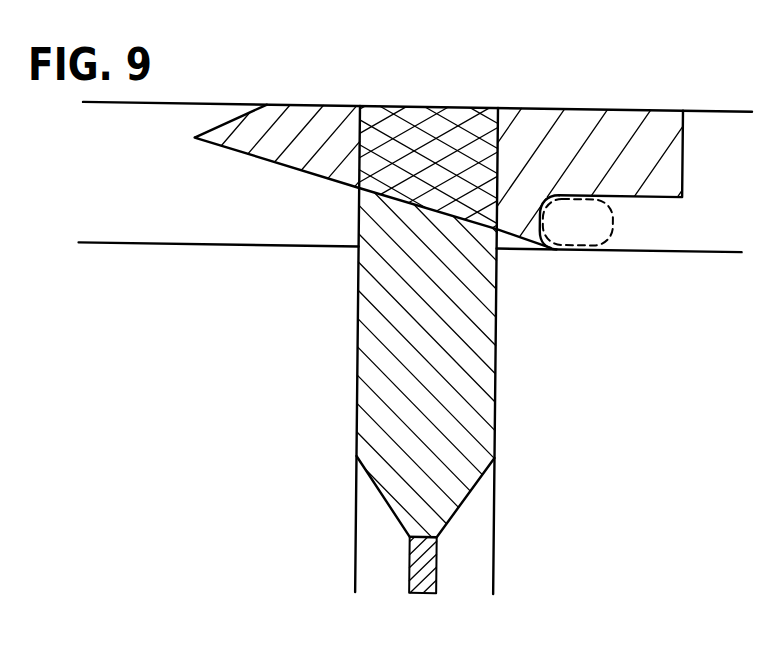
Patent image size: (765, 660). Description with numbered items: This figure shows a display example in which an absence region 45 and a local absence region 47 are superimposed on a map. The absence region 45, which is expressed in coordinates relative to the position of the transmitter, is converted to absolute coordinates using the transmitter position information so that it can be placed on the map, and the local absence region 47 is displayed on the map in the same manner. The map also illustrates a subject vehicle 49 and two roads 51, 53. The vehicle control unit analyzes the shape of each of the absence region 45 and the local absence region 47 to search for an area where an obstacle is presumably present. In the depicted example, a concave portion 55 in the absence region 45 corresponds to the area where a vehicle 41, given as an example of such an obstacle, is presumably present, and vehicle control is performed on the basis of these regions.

The vehicle 41 is at (615, 218).
The absence region 45 is at (652, 128).
The local absence region 47 is at (480, 366).
The subject vehicle 49 is at (422, 592).
The road 51 is at (481, 548).
The road 53 is at (254, 233).
The concave portion 55 is at (551, 197).